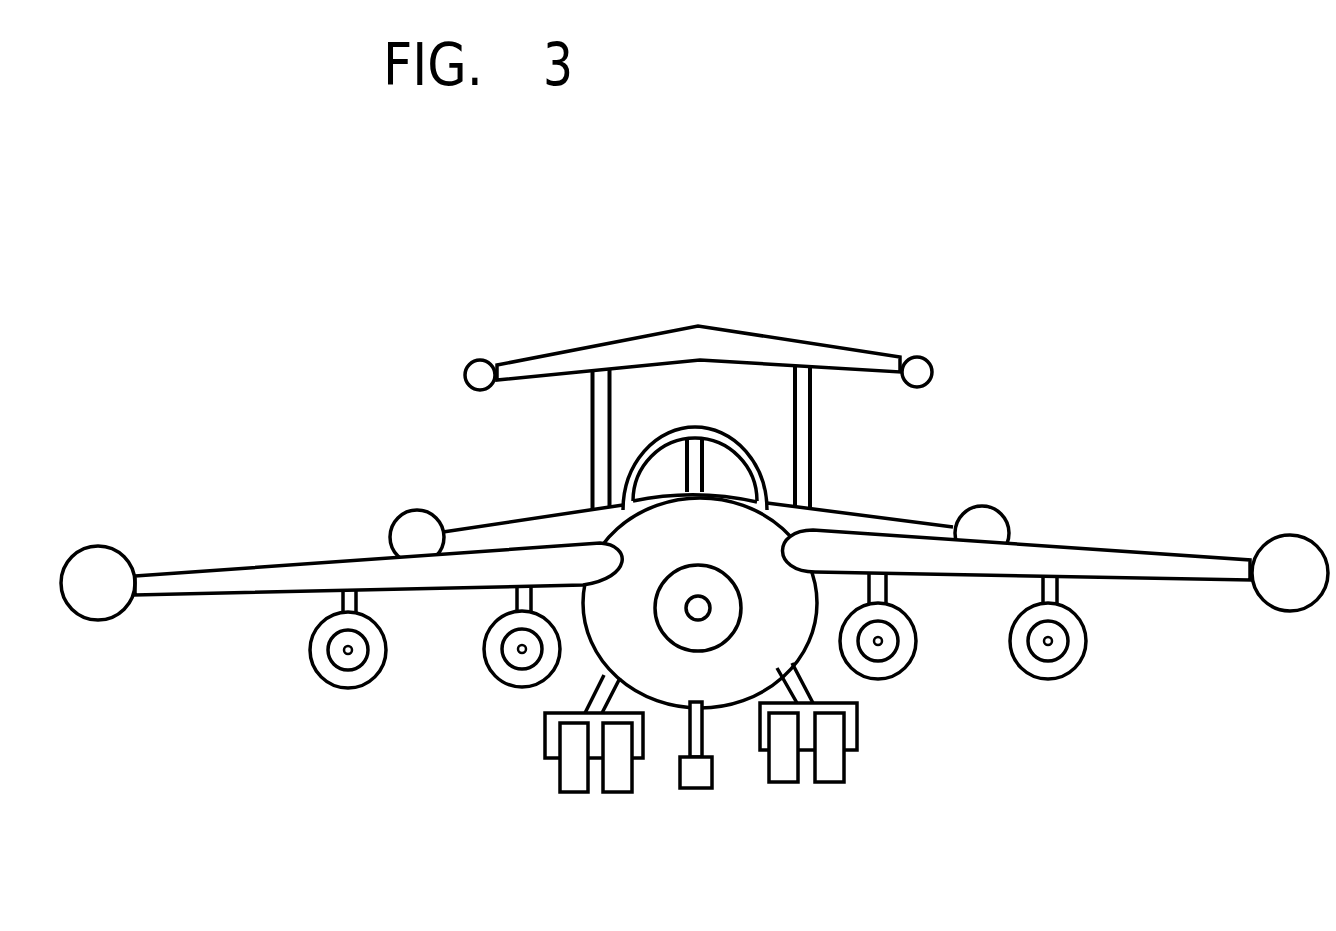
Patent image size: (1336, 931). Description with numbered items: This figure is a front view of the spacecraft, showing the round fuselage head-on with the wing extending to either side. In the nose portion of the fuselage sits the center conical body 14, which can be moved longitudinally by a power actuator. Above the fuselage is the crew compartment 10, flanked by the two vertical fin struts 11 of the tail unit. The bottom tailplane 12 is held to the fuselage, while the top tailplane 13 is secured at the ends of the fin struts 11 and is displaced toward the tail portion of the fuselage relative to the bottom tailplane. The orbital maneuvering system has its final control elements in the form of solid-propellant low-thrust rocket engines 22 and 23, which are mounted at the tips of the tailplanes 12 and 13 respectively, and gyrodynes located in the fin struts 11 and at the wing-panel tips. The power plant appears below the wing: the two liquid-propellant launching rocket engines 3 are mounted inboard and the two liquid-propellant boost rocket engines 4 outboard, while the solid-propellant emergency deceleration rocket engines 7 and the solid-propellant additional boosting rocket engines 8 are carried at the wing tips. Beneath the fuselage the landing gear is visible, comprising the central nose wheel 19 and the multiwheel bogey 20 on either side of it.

The liquid-propellant launching rocket engine 3 is at (498, 673).
The liquid-propellant boost rocket engine 4 is at (332, 677).
The solid-propellant emergency deceleration rocket engine 7 is at (697, 648).
The solid-propellant additional boosting rocket engine 8 is at (108, 612).
The crew compartment 10 is at (668, 463).
The vertical fin strut 11 is at (807, 403).
The bottom tailplane 12 is at (907, 528).
The top tailplane 13 is at (620, 342).
The center conical body 14 is at (717, 635).
The nose wheel 19 is at (697, 788).
The multiwheel bogey 20 is at (620, 783).
The solid-propellant low-thrust rocket engine 22 is at (745, 400).
The solid-propellant low-thrust rocket engine 23 is at (477, 373).